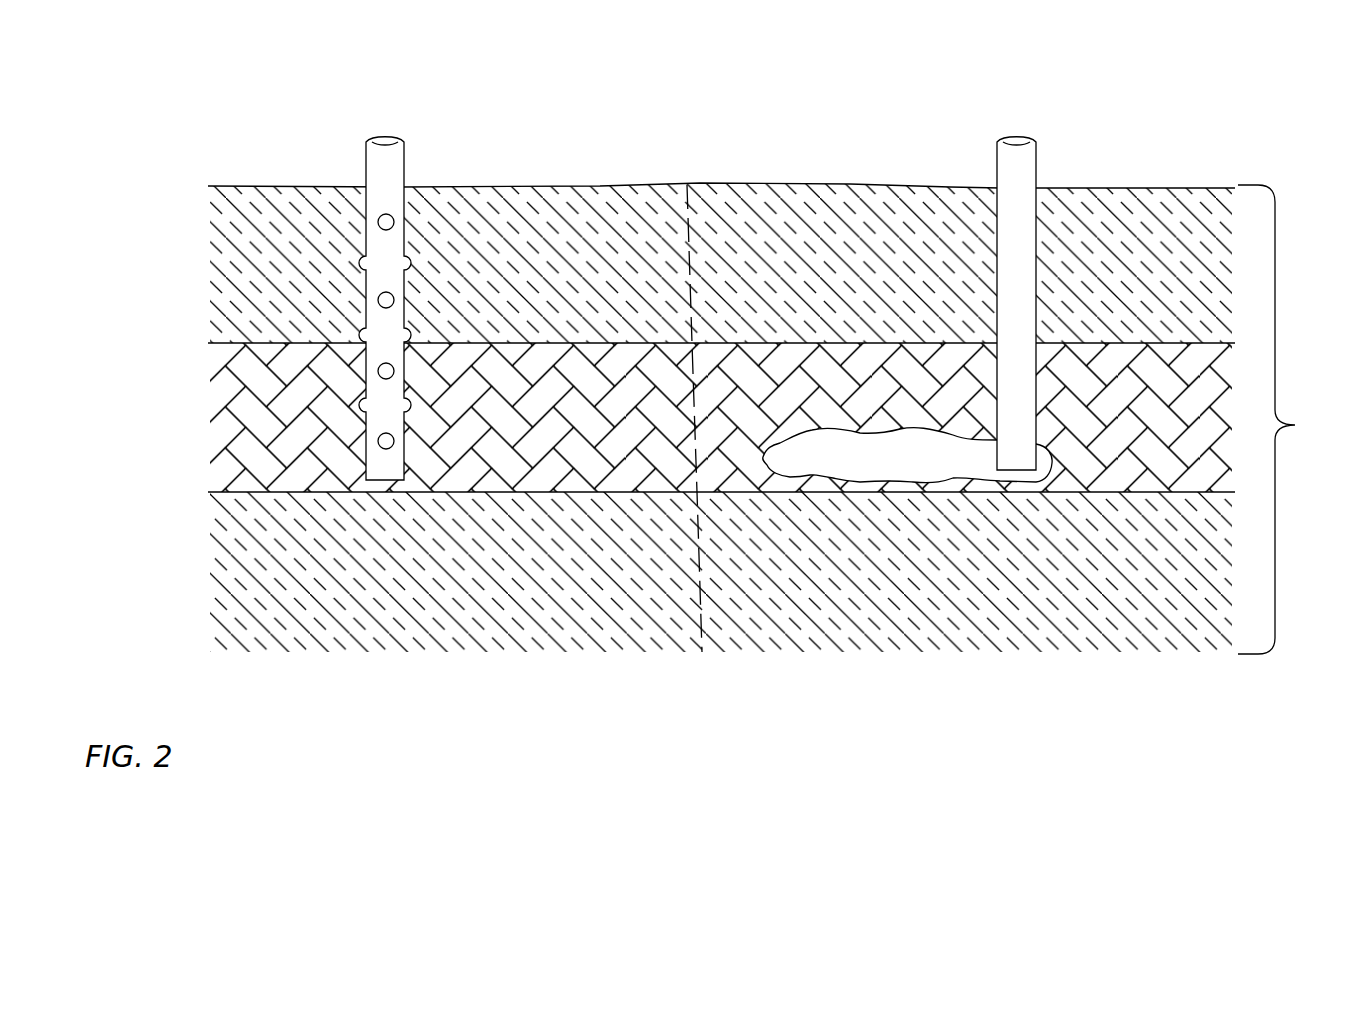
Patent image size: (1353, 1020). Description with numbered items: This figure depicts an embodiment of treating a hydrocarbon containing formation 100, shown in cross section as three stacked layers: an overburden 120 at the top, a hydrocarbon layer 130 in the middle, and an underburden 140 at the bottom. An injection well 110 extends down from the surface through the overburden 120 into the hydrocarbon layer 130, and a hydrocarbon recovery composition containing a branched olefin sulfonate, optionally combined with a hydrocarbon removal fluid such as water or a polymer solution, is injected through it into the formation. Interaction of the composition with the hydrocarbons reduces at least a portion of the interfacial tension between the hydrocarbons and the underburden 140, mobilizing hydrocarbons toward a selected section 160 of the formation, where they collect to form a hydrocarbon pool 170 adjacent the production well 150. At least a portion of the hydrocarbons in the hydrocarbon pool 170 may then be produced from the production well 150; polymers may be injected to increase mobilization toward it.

The hydrocarbon containing formation 100 is at (640, 379).
The injection well 110 is at (433, 294).
The overburden 120 is at (567, 291).
The hydrocarbon layer 130 is at (534, 391).
The underburden 140 is at (611, 592).
The production well 150 is at (1067, 299).
The selected section 160 is at (1291, 419).
The hydrocarbon pool 170 is at (930, 466).